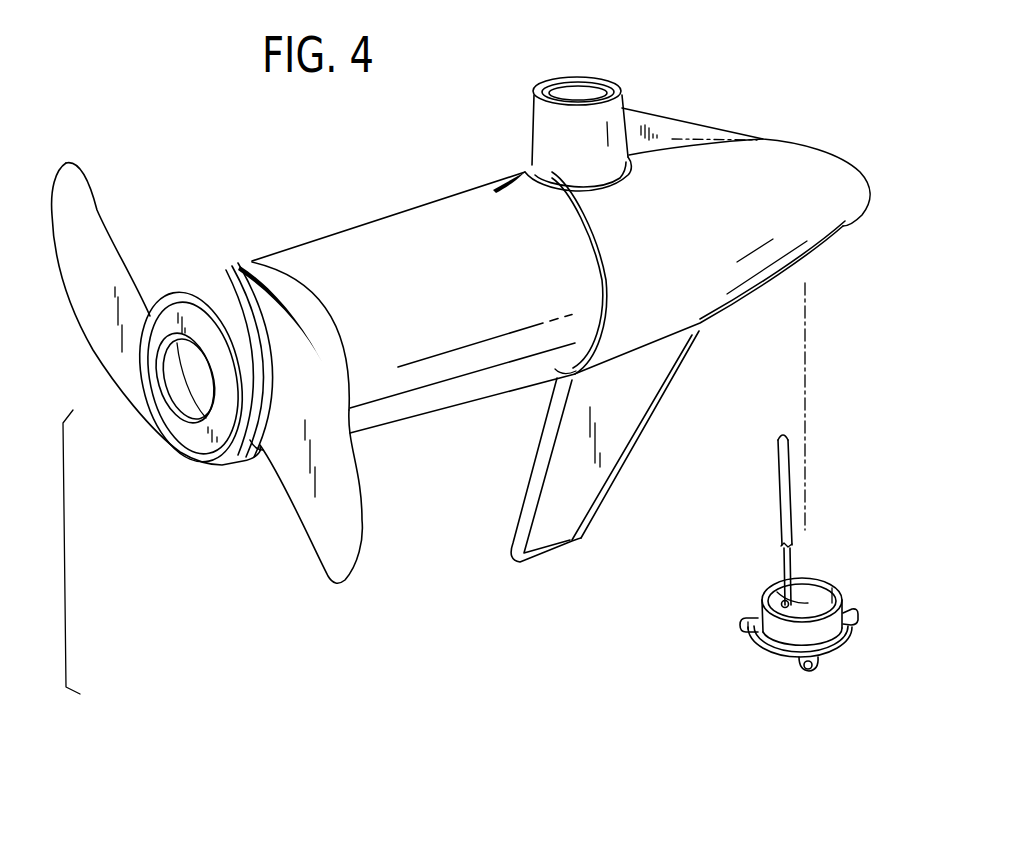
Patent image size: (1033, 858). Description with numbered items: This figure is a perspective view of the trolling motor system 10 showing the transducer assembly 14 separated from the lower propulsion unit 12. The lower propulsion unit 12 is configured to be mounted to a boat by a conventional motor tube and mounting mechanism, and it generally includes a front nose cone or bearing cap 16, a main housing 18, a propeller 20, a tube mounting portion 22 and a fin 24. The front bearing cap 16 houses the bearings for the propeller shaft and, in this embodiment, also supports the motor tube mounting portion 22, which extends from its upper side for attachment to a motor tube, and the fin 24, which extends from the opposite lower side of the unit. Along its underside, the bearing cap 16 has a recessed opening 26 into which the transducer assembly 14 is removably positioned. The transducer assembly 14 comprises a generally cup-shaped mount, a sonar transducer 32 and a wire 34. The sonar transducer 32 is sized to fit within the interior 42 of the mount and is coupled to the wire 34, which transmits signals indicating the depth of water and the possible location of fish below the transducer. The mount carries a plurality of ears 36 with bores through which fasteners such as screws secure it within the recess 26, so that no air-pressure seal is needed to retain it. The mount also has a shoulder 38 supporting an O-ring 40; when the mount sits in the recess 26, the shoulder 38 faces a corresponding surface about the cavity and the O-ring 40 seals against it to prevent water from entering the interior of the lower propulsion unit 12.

The trolling motor system 10 is at (509, 54).
The lower propulsion unit 12 is at (323, 238).
The transducer assembly 14 is at (832, 408).
The front bearing cap 16 is at (835, 175).
The main housing 18 is at (448, 367).
The propeller 20 is at (97, 243).
The tube mounting portion 22 is at (590, 120).
The fin 24 is at (627, 420).
The recessed opening 26 is at (801, 273).
The sonar transducer 32 is at (807, 605).
The wire 34 is at (780, 511).
The ears 36 is at (852, 616).
The shoulder 38 is at (770, 658).
The O-ring 40 is at (843, 657).
The interior 42 is at (806, 585).